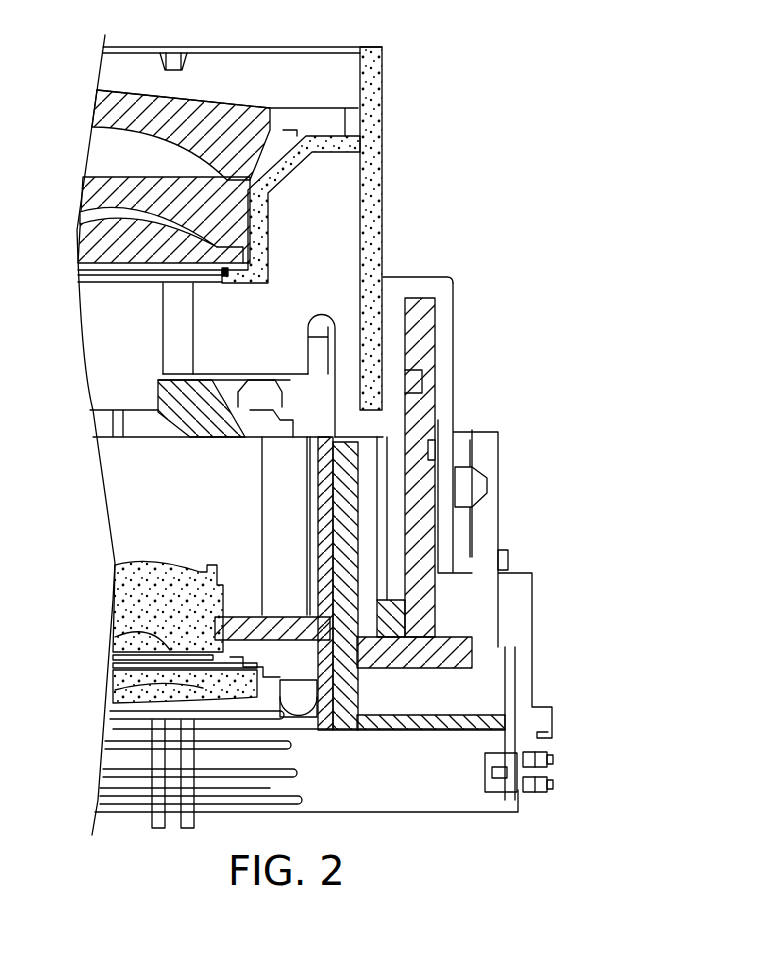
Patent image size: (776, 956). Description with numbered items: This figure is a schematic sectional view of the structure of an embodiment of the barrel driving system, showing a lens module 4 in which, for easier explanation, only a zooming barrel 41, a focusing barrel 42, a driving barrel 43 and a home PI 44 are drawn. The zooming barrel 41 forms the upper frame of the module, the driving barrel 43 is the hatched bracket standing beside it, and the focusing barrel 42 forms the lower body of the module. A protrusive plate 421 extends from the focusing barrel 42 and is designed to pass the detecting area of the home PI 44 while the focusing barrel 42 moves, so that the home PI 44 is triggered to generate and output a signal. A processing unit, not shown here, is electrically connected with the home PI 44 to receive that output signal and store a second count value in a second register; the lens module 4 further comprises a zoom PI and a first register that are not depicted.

The lens module 4 is at (653, 357).
The zooming barrel 41 is at (382, 158).
The focusing barrel 42 is at (340, 733).
The protrusive plate 421 is at (452, 714).
The driving barrel 43 is at (436, 360).
The home PI 44 is at (552, 783).